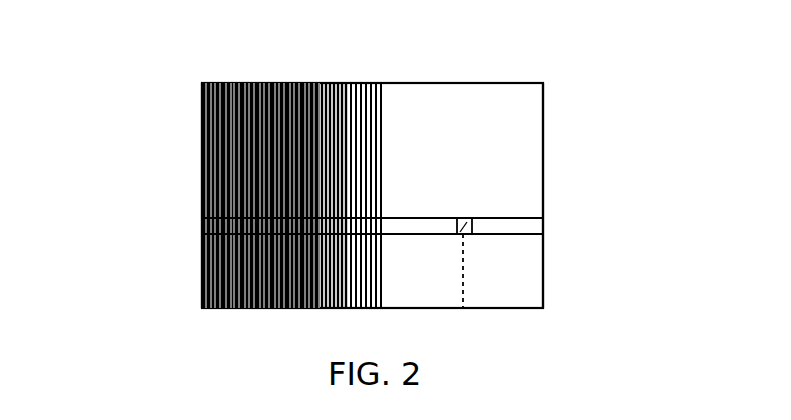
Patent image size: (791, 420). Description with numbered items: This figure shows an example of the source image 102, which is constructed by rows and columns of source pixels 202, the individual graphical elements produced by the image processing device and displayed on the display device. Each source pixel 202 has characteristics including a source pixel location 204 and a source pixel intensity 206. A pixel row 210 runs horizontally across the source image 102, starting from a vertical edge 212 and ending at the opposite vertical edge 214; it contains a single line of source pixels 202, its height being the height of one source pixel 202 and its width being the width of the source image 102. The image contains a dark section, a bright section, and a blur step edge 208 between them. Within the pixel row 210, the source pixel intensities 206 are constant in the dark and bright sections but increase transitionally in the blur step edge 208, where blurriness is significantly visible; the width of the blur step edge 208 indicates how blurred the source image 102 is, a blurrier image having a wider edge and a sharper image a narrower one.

The source image 102 is at (205, 52).
The source pixel 202 is at (469, 215).
The source pixel location 204 is at (472, 287).
The source pixel intensity 206 is at (466, 228).
The blur step edge 208 is at (366, 101).
The pixel row 210 is at (202, 227).
The vertical edge 212 is at (197, 287).
The opposite vertical edge 214 is at (549, 282).